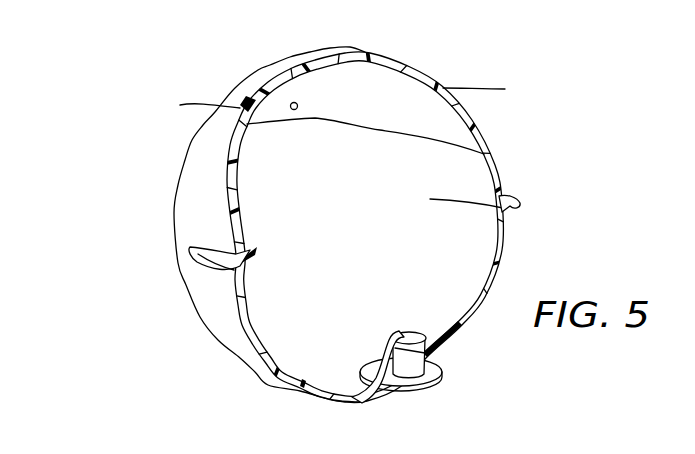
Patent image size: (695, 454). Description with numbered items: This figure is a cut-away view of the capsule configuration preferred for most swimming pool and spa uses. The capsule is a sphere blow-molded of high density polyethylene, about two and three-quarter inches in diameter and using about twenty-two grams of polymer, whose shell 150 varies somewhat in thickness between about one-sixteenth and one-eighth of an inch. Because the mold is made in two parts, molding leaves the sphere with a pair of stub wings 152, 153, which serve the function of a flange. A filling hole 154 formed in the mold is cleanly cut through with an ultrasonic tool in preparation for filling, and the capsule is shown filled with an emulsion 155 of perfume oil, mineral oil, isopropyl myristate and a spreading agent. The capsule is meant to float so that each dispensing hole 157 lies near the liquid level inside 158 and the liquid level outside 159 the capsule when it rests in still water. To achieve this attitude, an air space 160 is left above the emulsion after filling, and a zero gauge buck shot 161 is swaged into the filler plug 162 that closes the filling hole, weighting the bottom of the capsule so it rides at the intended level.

The shell 150 is at (375, 53).
The stub wing 152 is at (209, 258).
The stub wing 153 is at (520, 197).
The filling hole 154 is at (420, 340).
The emulsion 155 is at (393, 221).
The dispensing hole 157 is at (297, 103).
The liquid level inside 158 is at (417, 133).
The liquid level outside 159 is at (465, 87).
The air space 160 is at (363, 118).
The buck shot 161 is at (440, 365).
The filler plug 162 is at (415, 393).